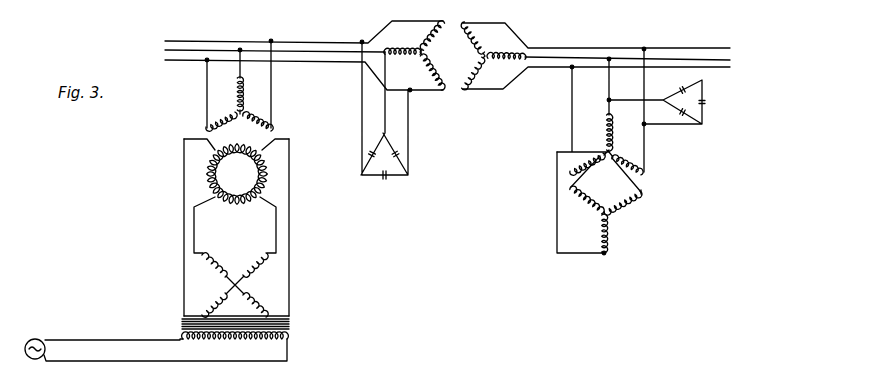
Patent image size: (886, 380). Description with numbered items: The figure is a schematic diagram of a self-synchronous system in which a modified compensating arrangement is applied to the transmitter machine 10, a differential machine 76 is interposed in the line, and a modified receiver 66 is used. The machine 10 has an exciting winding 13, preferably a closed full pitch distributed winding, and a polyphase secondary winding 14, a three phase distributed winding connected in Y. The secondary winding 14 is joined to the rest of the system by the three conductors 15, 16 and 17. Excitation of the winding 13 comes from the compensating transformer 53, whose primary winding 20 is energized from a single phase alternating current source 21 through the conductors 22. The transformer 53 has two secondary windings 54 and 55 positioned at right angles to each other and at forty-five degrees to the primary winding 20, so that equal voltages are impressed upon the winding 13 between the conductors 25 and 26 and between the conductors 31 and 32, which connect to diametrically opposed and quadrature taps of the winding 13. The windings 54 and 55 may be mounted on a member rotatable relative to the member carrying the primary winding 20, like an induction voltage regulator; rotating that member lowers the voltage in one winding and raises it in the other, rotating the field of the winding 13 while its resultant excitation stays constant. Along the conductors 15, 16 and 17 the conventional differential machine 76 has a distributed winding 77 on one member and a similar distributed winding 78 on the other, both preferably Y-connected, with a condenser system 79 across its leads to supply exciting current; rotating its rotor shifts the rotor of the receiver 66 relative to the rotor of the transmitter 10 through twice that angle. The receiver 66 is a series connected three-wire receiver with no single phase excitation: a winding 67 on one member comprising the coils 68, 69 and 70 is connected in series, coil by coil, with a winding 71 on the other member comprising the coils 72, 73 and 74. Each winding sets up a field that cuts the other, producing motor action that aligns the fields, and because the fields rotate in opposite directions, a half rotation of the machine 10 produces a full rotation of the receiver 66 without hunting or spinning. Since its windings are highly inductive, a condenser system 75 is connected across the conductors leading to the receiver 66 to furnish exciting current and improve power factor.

The machine 10 is at (182, 157).
The exciting winding 13 is at (221, 147).
The polyphase secondary winding 14 is at (243, 104).
The conductor 15 is at (283, 61).
The conductor 16 is at (305, 52).
The conductor 17 is at (333, 43).
The primary winding 20 is at (223, 342).
The source 21 is at (40, 340).
The conductors 22 is at (103, 339).
The conductor 25 is at (194, 236).
The conductor 26 is at (291, 183).
The conductor 31 is at (276, 233).
The conductor 32 is at (182, 184).
The compensating transformer 53 is at (291, 327).
The secondary winding 54 is at (260, 309).
The secondary winding 55 is at (247, 267).
The receiver 66 is at (646, 196).
The winding 67 is at (626, 143).
The coil 68 is at (607, 128).
The coil 69 is at (583, 158).
The coil 70 is at (636, 167).
The winding 71 is at (619, 222).
The coil 72 is at (610, 247).
The coil 73 is at (592, 217).
The coil 74 is at (634, 206).
The condenser system 75 is at (706, 114).
The differential machine 76 is at (455, 94).
The distributed winding 77 is at (403, 50).
The distributed winding 78 is at (507, 54).
The condenser system 79 is at (405, 162).